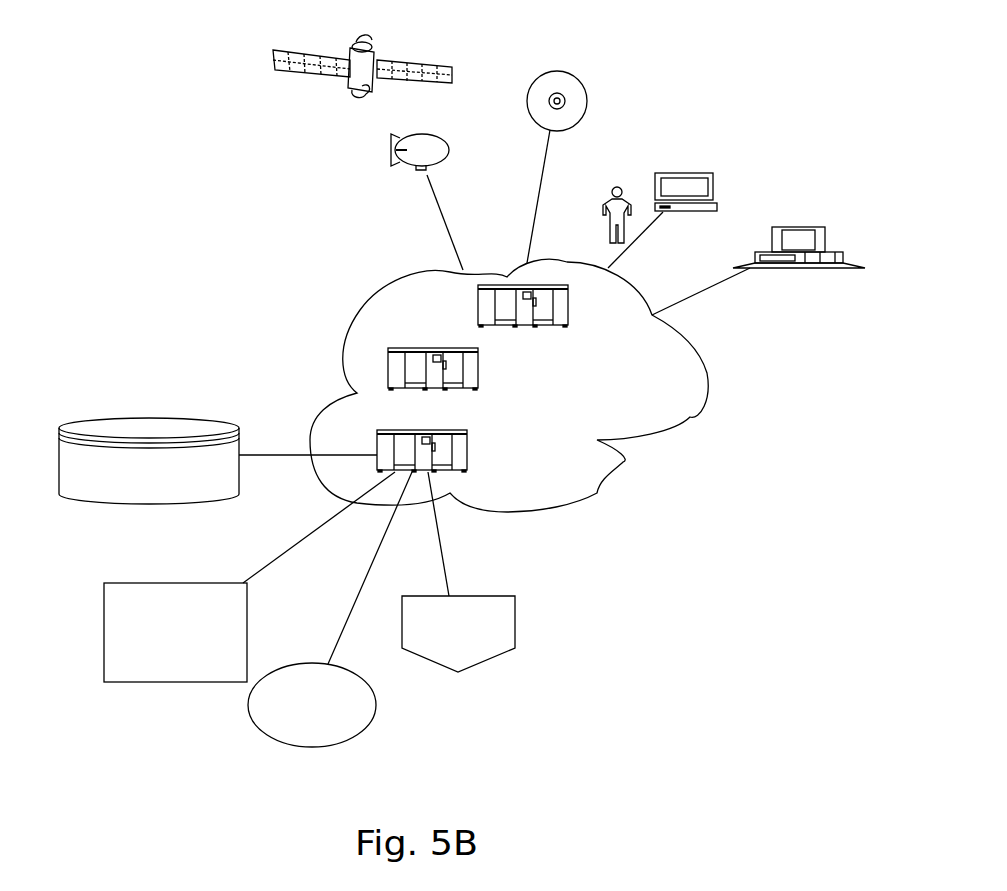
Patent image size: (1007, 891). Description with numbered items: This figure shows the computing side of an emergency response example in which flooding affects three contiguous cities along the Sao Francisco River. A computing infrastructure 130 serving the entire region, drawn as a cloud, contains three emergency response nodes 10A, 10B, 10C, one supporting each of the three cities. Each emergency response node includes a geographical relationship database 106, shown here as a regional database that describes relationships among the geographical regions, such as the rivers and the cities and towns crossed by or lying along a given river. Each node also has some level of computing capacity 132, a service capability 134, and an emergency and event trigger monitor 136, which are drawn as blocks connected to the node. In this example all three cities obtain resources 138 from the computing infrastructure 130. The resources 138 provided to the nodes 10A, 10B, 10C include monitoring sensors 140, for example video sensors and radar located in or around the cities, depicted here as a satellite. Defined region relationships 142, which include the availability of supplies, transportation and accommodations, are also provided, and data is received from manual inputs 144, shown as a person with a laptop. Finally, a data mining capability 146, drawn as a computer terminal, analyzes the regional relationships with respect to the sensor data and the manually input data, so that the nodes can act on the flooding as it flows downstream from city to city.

The emergency response node 10A is at (377, 437).
The emergency response node 10B is at (397, 348).
The emergency response node 10C is at (478, 297).
The geographical relationship database 106 is at (140, 418).
The computing infrastructure 130 is at (597, 493).
The computing capacity 132 is at (158, 583).
The service capability 134 is at (293, 663).
The emergency and event trigger monitor 136 is at (425, 575).
The resources 138 is at (582, 692).
The monitoring sensors 140 is at (273, 60).
The defined region relationships 142 is at (588, 92).
The manual inputs 144 is at (692, 172).
The data mining capability 146 is at (793, 227).